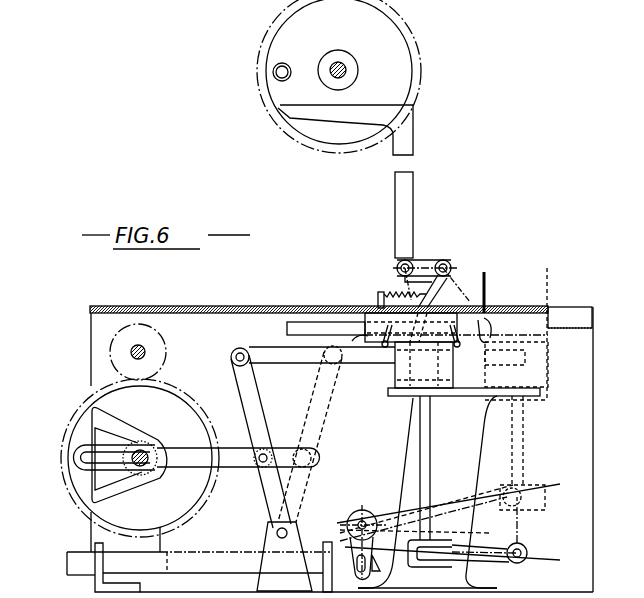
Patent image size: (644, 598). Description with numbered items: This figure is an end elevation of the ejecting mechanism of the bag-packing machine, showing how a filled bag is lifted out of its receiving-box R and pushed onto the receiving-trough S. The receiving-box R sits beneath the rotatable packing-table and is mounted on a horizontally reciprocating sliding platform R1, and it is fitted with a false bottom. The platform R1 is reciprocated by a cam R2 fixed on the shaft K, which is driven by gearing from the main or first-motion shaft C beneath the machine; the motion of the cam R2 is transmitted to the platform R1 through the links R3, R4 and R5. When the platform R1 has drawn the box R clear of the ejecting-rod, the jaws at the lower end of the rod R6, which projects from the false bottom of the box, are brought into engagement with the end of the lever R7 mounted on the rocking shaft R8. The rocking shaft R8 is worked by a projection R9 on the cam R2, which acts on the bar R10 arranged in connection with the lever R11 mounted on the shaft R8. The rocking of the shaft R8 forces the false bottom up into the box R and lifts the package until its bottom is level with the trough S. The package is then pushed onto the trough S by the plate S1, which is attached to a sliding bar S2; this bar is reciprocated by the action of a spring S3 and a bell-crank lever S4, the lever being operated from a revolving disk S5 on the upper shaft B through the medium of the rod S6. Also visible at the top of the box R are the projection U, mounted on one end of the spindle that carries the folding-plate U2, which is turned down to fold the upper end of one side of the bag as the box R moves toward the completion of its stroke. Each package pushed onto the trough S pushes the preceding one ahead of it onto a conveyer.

The shaft B is at (347, 70).
The revolving disk S5 is at (390, 90).
The rod S6 is at (413, 190).
The bell-crank lever S4 is at (433, 290).
The spring S3 is at (400, 293).
The plate S1 is at (486, 290).
The folding-plate U2 is at (488, 322).
The receiving-trough S is at (560, 331).
The sliding bar S2 is at (286, 328).
The link R5 is at (383, 360).
The receiving-box R is at (450, 358).
The projection U is at (351, 342).
The link R4 is at (255, 398).
The cam R2 is at (112, 424).
The shaft K is at (150, 447).
The projection R9 is at (72, 455).
The link R3 is at (239, 461).
The bar R10 is at (133, 562).
The rocking shaft R8 is at (363, 512).
The lever R11 is at (348, 533).
The sliding platform R1 is at (427, 492).
The rod R6 is at (431, 478).
The lever R7 is at (478, 546).
The main or first-motion shaft C is at (146, 351).